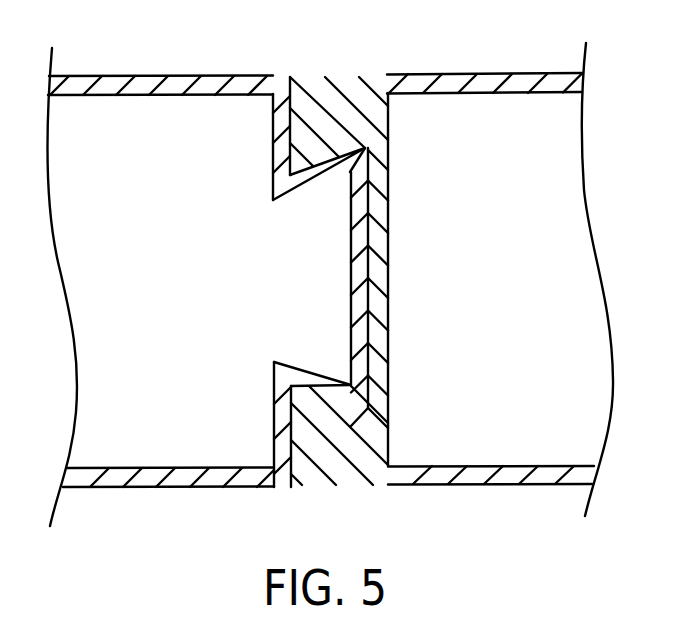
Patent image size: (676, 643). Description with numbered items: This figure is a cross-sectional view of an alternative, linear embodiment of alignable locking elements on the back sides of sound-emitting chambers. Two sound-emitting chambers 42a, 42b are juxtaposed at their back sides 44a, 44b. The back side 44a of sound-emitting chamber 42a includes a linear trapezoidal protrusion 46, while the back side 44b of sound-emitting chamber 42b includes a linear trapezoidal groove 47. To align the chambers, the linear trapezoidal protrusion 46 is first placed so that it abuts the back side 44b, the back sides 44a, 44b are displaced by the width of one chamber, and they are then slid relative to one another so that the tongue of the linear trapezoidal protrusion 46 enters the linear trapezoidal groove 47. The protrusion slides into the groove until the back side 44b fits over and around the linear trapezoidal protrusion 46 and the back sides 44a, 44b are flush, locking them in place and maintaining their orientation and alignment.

The sound-emitting chamber 42a is at (140, 458).
The sound-emitting chamber 42b is at (533, 450).
The back side 44a is at (275, 419).
The back side 44b is at (374, 423).
The linear trapezoidal protrusion 46 is at (351, 340).
The linear trapezoidal groove 47 is at (351, 242).